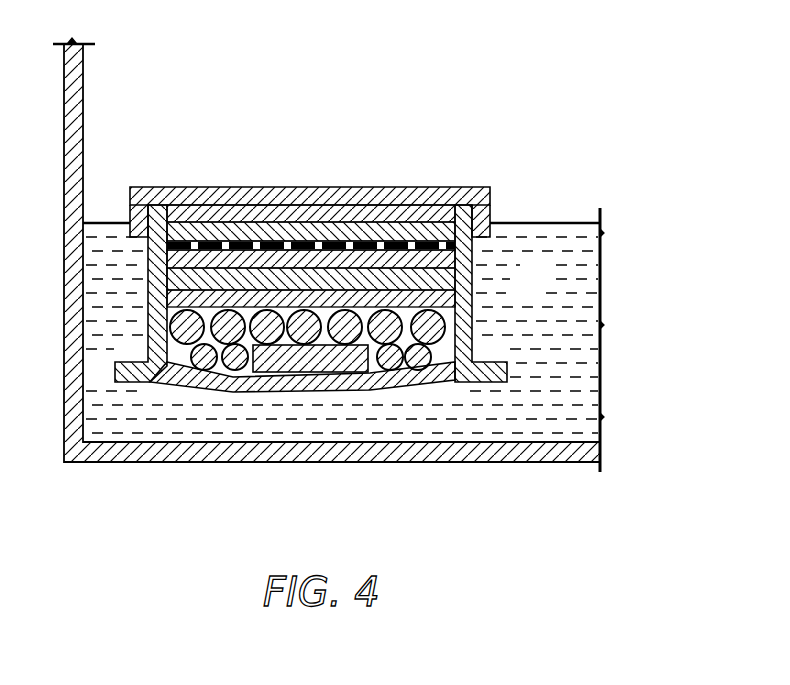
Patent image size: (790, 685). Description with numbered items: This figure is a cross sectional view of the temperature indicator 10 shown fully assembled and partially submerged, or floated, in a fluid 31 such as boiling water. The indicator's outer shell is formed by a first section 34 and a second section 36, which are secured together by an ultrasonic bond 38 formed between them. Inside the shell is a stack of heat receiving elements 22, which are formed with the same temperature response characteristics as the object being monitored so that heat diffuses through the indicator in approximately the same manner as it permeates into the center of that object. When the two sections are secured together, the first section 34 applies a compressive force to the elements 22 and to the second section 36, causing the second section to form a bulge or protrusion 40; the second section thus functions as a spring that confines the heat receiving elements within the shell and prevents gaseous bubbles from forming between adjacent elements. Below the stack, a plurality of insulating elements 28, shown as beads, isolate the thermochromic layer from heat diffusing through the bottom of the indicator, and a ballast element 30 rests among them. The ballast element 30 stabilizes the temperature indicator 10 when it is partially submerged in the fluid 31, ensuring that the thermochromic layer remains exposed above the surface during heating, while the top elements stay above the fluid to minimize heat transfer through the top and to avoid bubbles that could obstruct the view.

The temperature indicator 10 is at (331, 146).
The heat receiving elements 22 is at (432, 280).
The insulating elements 28 is at (233, 370).
The ballast element 30 is at (326, 425).
The fluid 31 is at (553, 275).
The first section 34 is at (312, 167).
The second section 36 is at (470, 338).
The ultrasonic bond 38 is at (180, 188).
The bulge or protrusion 40 is at (302, 434).